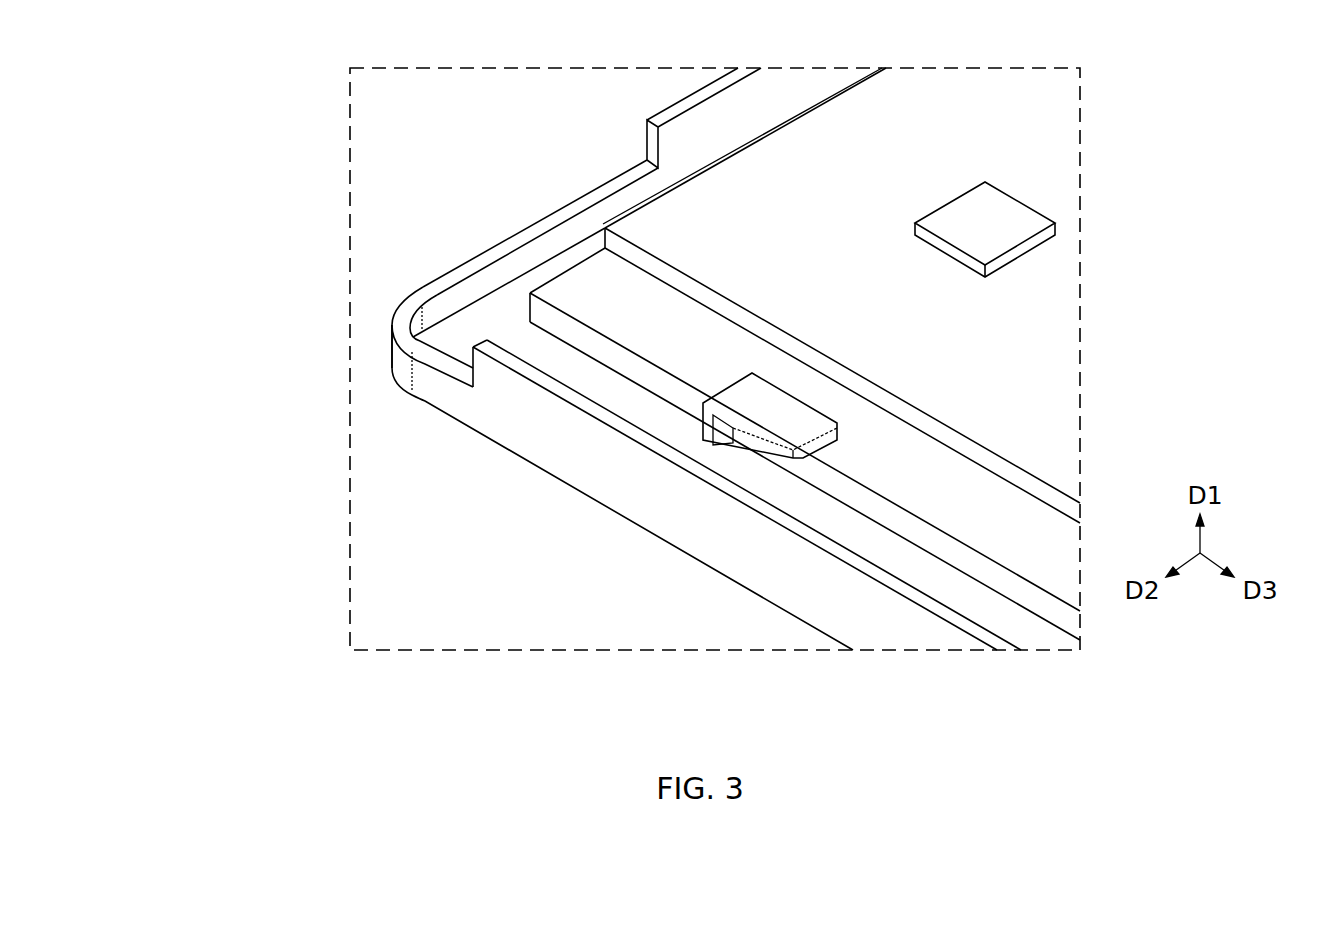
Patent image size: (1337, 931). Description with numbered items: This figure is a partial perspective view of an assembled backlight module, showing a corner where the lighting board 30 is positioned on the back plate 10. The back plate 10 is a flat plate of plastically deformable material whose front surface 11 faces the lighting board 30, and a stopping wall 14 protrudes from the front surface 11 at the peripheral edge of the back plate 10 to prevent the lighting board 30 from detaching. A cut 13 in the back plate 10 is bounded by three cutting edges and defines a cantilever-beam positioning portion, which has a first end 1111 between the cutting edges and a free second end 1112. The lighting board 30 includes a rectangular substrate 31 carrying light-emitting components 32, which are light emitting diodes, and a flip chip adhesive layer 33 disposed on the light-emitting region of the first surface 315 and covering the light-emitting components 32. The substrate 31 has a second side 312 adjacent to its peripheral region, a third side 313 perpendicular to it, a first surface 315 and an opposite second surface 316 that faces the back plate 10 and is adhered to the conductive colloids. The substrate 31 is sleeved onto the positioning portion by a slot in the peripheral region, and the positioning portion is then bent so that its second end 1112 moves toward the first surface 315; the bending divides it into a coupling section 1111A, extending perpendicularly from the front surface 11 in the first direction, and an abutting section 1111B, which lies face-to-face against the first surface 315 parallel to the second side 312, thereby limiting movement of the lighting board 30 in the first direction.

The back plate 10 is at (390, 342).
The front surface 11 is at (495, 318).
The cut 13 is at (765, 470).
The stopping wall 14 is at (668, 112).
The lighting board 30 is at (716, 162).
The substrate 31 is at (553, 277).
The light-emitting component 32 is at (1043, 222).
The flip chip adhesive layer 33 is at (577, 282).
The second side 312 is at (873, 503).
The third side 313 is at (488, 308).
The first surface 315 is at (527, 305).
The second surface 316 is at (412, 372).
The first end 1111 is at (707, 443).
The coupling section 1111A is at (705, 438).
The abutting section 1111B is at (707, 427).
The second end 1112 is at (822, 445).